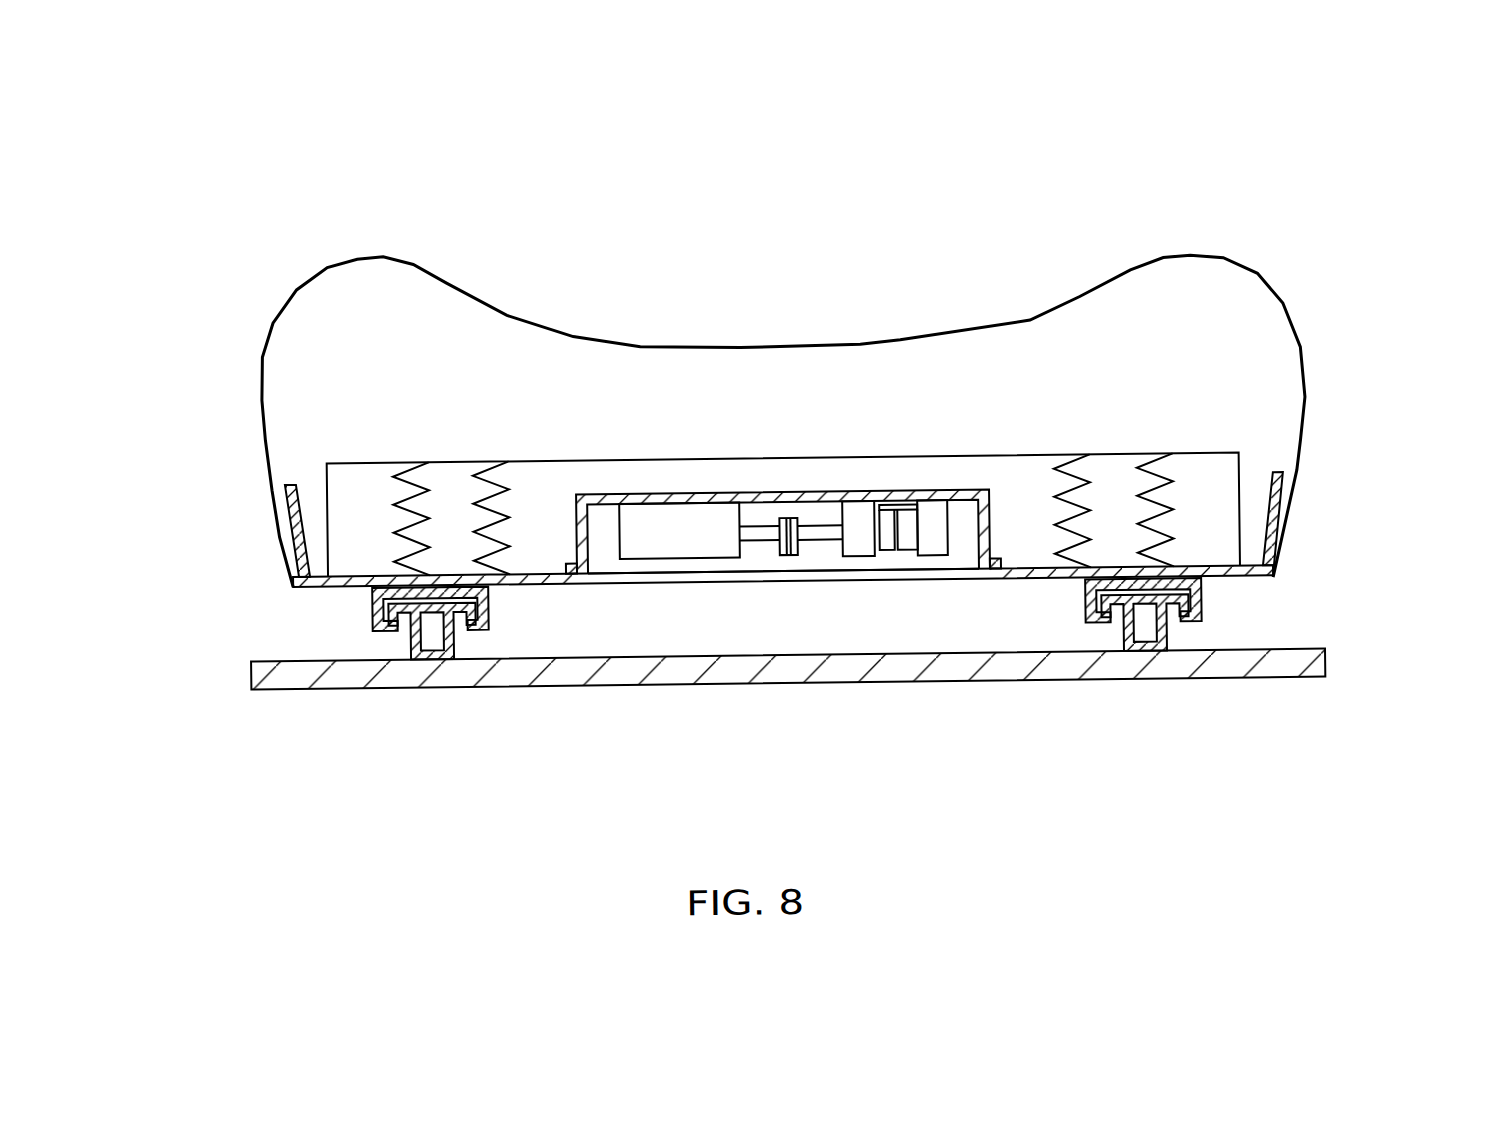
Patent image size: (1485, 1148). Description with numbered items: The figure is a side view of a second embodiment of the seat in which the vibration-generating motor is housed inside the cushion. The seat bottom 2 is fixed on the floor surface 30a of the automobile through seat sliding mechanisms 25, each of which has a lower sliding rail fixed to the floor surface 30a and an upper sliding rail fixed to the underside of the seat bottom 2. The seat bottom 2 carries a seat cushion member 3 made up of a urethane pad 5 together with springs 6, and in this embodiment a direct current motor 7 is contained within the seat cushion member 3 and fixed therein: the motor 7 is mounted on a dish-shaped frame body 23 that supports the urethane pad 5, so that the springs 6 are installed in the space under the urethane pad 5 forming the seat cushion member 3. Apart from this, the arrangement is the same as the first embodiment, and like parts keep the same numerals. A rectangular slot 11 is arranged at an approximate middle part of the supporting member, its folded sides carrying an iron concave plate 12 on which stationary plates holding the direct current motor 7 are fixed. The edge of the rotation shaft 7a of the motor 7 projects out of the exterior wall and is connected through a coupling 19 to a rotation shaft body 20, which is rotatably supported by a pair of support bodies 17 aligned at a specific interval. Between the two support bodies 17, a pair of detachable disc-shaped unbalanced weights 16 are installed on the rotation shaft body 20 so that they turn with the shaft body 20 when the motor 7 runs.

The seat bottom 2 is at (833, 396).
The seat cushion member 3 is at (1122, 250).
The urethane pad 5 is at (920, 295).
The spring 6 is at (861, 377).
The direct current motor 7 is at (825, 660).
The rotation shaft 7a is at (722, 665).
The rectangular slot 11 is at (734, 689).
The concave plate 12 is at (781, 395).
The unbalanced weight 16 is at (923, 662).
The support body 17 is at (876, 660).
The coupling 19 is at (768, 653).
The rotation shaft body 20 is at (828, 672).
The frame body 23 is at (784, 675).
The seat sliding mechanism 25 is at (684, 607).
The floor surface 30a is at (848, 619).